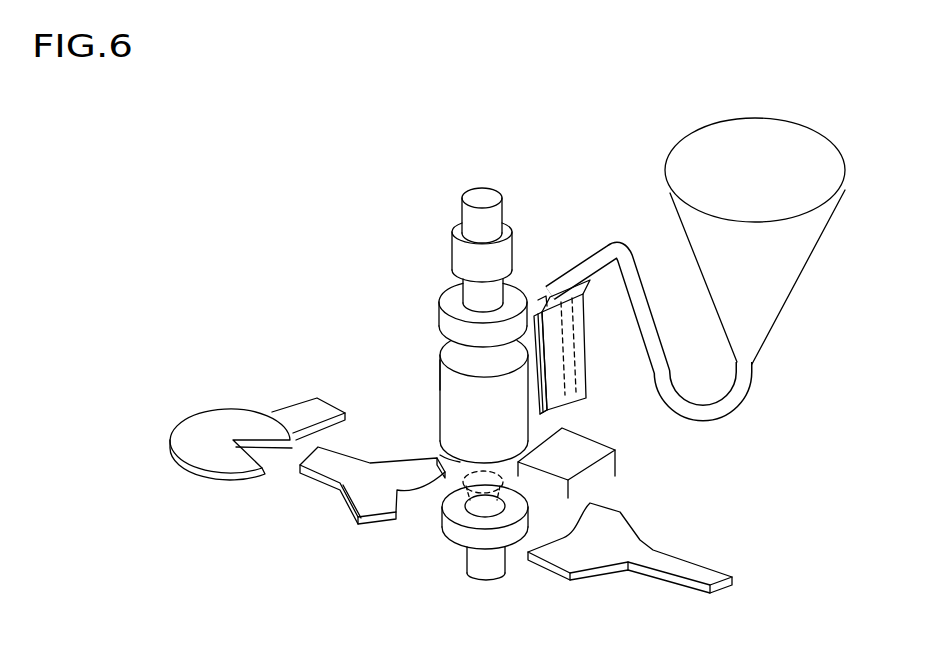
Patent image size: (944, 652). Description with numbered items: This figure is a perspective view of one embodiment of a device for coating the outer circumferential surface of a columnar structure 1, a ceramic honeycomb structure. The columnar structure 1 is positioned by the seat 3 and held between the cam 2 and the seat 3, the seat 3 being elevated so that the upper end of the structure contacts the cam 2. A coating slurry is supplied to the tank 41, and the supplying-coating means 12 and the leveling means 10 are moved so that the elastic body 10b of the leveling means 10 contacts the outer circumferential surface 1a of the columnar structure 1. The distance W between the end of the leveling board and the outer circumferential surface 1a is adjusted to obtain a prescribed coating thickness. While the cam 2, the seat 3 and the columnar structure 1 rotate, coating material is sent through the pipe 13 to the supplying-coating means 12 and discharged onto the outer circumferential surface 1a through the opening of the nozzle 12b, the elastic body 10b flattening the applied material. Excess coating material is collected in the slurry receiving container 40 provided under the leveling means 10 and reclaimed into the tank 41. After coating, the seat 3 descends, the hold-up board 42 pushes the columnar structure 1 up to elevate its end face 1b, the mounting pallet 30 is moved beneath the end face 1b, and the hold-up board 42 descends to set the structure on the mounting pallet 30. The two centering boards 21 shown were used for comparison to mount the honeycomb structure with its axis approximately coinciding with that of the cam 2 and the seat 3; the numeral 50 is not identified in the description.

The columnar structure 1 is at (445, 402).
The outer circumferential surface 1a is at (438, 376).
The end face 1b is at (454, 463).
The cam 2 is at (442, 325).
The seat 3 is at (452, 530).
The leveling means 10 is at (587, 375).
The elastic body 10b is at (545, 408).
The supplying-coating means 12 is at (572, 345).
The nozzle 12b is at (541, 292).
The pipe 13 is at (725, 421).
The centering boards 21 is at (365, 500).
The mounting pallet 30 is at (237, 423).
The slurry receiving container 40 is at (603, 472).
The tank 41 is at (681, 153).
The hold-up board 42 is at (487, 512).
The supply unit 50 is at (818, 326).
The distance W is at (537, 387).